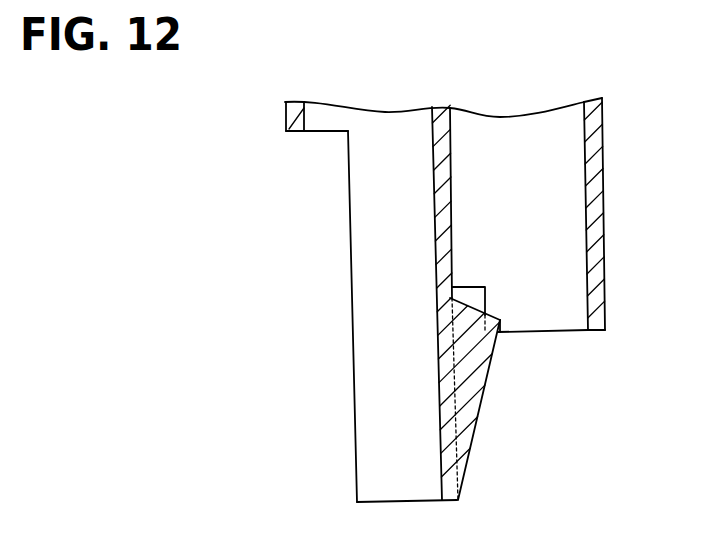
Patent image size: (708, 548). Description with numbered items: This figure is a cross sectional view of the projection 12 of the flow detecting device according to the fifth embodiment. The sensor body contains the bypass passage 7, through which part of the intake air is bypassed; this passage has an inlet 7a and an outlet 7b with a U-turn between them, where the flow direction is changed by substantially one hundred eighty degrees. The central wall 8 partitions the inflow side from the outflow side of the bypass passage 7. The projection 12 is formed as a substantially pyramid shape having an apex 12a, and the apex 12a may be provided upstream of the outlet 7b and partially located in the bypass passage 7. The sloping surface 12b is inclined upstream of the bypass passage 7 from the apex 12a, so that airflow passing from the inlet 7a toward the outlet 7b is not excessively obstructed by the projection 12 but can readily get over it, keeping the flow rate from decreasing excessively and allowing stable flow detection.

The bypass passage 7 is at (472, 122).
The inlet 7a is at (355, 457).
The outlet 7b is at (555, 333).
The central wall 8 is at (437, 251).
The projection 12 is at (479, 427).
The apex 12a is at (500, 320).
The sloping surface 12b is at (462, 306).